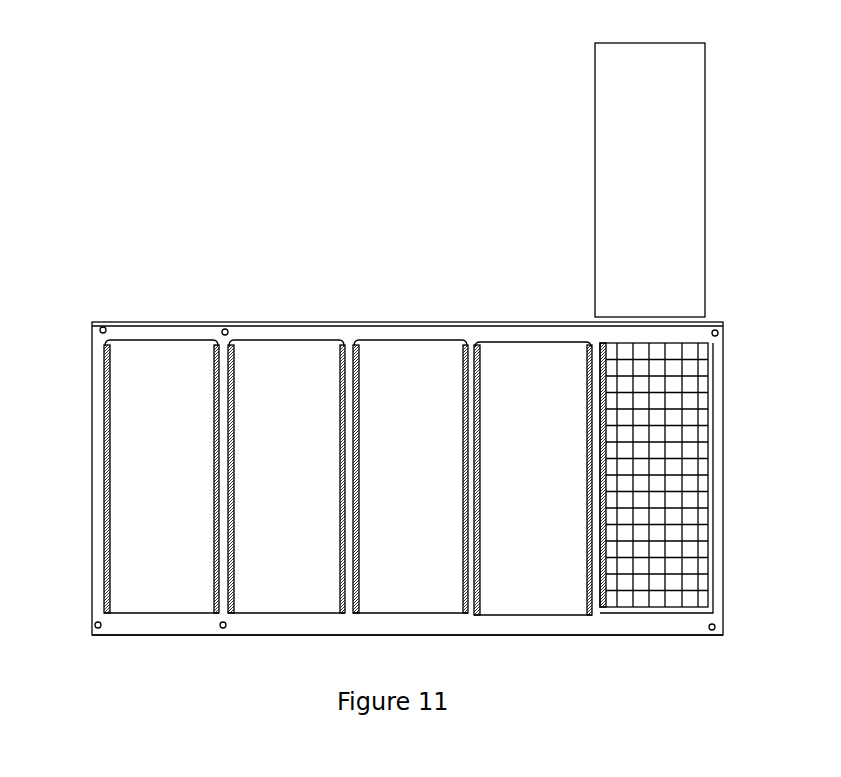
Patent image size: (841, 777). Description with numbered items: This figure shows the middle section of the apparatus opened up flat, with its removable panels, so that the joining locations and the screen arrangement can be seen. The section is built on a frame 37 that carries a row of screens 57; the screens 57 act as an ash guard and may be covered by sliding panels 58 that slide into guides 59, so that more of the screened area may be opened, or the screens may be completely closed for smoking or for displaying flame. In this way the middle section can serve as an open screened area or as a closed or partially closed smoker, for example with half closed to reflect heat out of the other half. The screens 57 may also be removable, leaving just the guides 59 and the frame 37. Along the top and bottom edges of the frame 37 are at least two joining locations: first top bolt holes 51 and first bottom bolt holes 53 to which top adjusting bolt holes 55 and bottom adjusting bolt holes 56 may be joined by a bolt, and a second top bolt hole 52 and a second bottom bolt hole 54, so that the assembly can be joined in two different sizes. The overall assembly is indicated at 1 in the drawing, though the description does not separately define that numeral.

The solar panel assembly 1 is at (333, 328).
The frame 37 is at (535, 625).
The first top bolt holes 51 is at (103, 330).
The second top bolt hole 52 is at (225, 332).
The first bottom bolt holes 53 is at (100, 627).
The second bottom bolt hole 54 is at (224, 628).
The top adjusting bolt holes 55 is at (718, 333).
The bottom adjusting bolt holes 56 is at (715, 627).
The screens 57 is at (688, 410).
The sliding panels 58 is at (665, 237).
The guides 59 is at (717, 520).